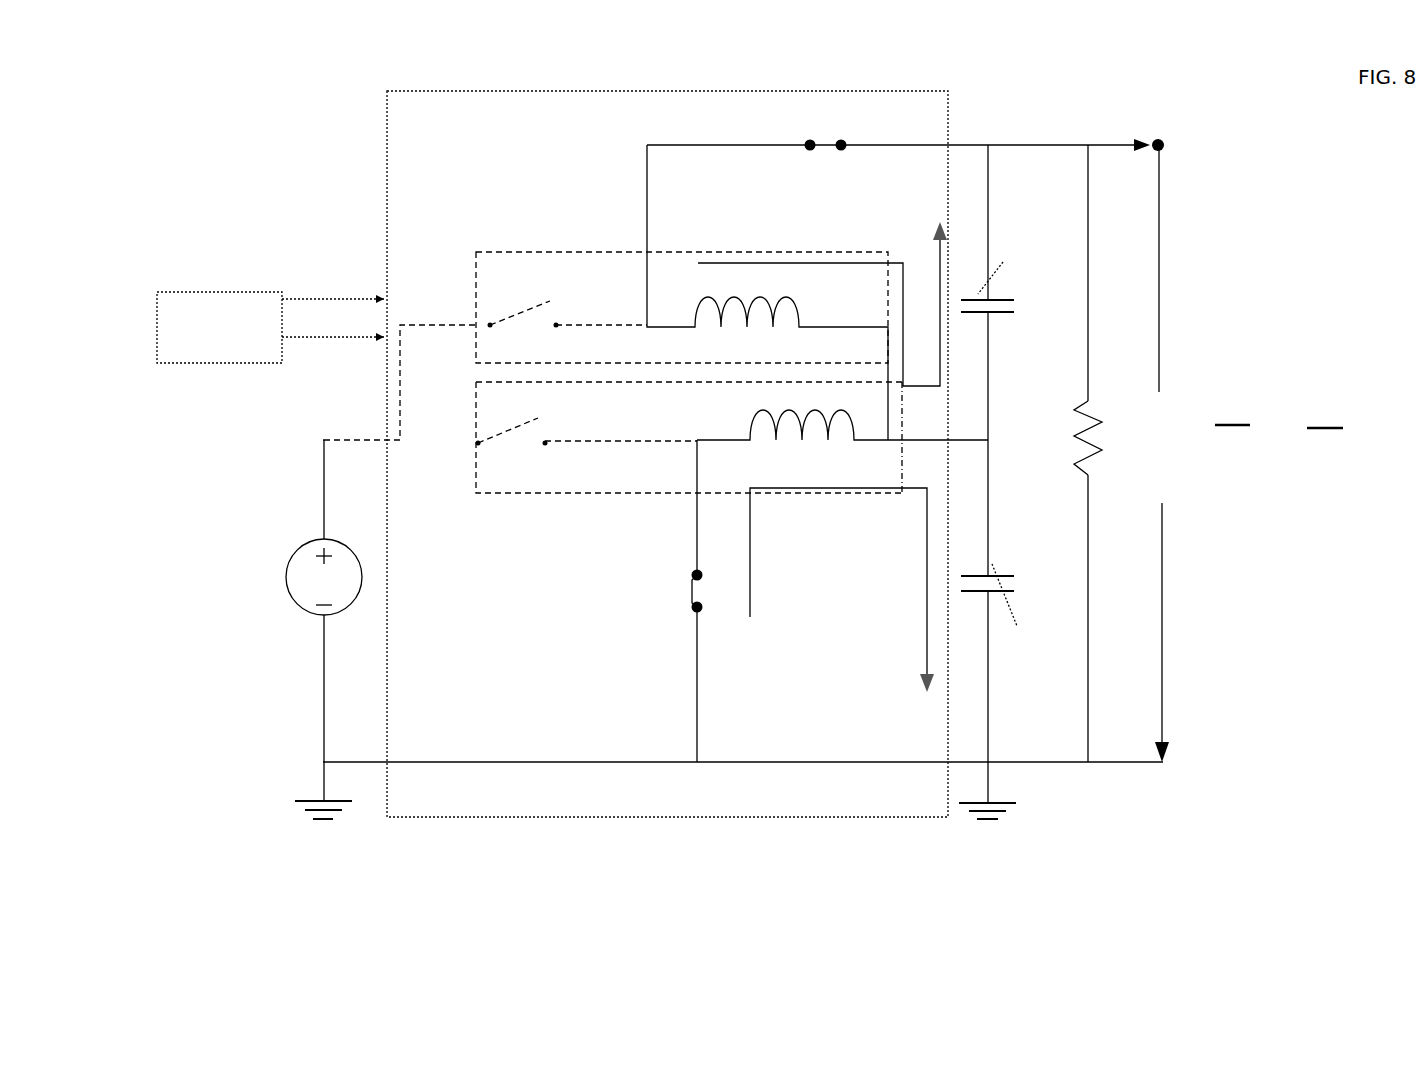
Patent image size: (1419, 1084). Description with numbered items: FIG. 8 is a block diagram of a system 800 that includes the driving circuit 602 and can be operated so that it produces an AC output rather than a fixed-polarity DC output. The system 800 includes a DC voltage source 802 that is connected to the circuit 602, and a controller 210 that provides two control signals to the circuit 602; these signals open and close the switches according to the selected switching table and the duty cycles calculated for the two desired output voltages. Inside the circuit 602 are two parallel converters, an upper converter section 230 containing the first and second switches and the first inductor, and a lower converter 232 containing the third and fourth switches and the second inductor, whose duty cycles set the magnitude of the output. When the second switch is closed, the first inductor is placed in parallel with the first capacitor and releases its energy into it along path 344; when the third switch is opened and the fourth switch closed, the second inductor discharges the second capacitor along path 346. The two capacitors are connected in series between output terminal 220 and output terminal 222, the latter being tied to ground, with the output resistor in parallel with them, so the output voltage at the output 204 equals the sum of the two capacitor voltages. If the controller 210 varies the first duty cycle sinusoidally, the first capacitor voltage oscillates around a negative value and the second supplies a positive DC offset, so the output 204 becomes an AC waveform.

The system 800 is at (760, 431).
The DC voltage source 802 is at (297, 556).
The controller 210 is at (270, 320).
The driving circuit 602 is at (413, 87).
The upper converter section 230 is at (569, 267).
The parallel converter 232 is at (613, 505).
The path 344 is at (902, 257).
The path 346 is at (941, 630).
The output terminal 220 is at (1193, 112).
The output terminal 222 is at (1111, 700).
The output 204 is at (1172, 308).